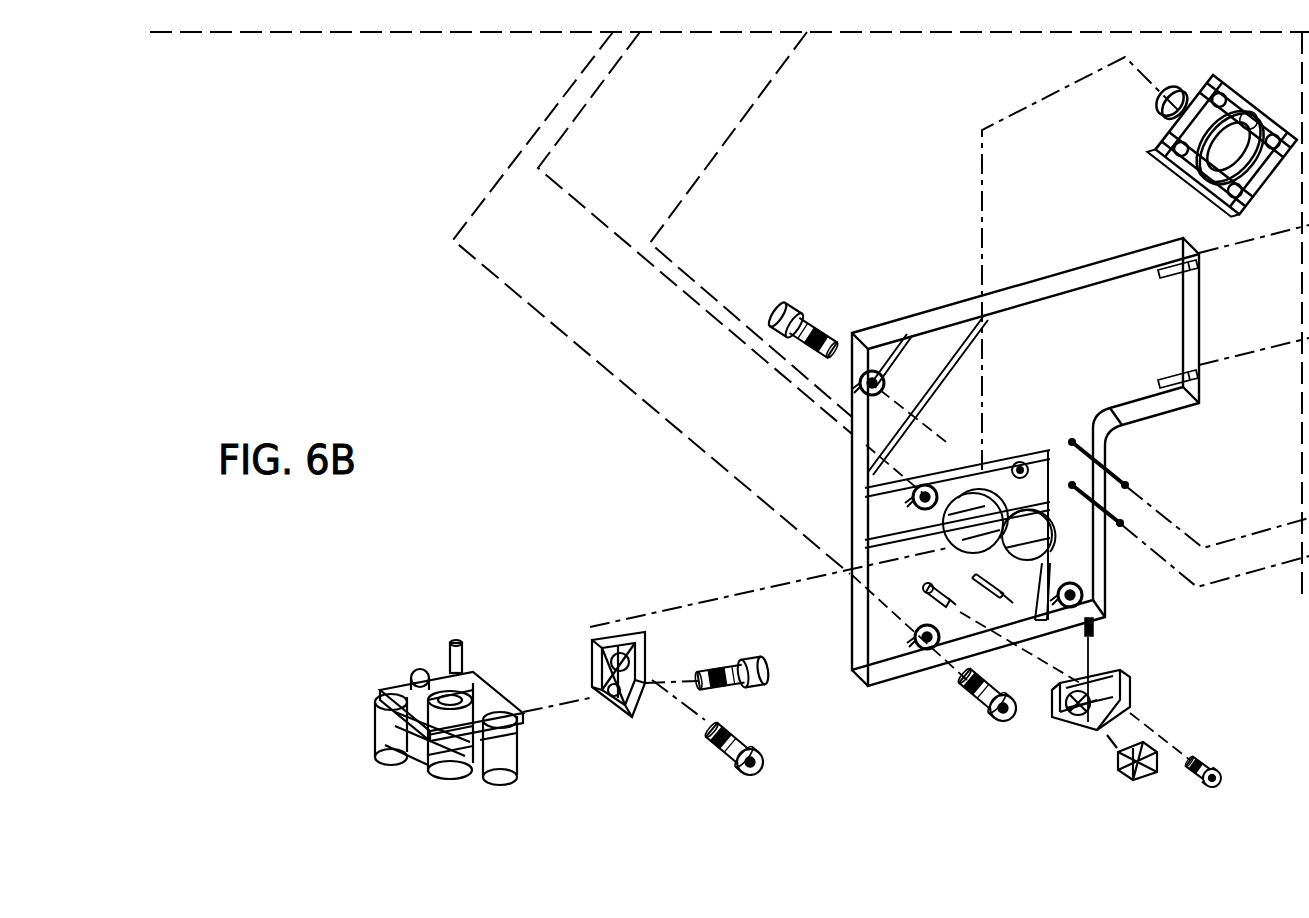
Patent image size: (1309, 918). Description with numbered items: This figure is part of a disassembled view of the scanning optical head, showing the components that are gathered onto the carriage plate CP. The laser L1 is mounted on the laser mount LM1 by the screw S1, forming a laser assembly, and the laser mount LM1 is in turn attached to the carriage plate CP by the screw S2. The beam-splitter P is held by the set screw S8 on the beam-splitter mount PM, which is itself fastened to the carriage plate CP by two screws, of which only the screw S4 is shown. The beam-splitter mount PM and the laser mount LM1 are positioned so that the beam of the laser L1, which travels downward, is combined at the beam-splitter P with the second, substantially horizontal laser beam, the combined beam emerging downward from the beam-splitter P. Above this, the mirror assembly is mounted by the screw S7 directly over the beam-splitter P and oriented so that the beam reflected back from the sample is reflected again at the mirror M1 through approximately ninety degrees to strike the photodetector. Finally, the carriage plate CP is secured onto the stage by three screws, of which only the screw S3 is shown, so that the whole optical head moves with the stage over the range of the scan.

The mirror M1 is at (1248, 85).
The carriage plate CP is at (1035, 283).
The screw S7 is at (798, 304).
The set screw S8 is at (1097, 623).
The beam-splitter mount PM is at (1133, 686).
The beam-splitter P is at (1116, 754).
The screw S4 is at (1211, 762).
The screw S3 is at (990, 719).
The screw S1 is at (753, 660).
The screw S2 is at (761, 754).
The laser mount LM1 is at (646, 634).
The laser L1 is at (366, 732).